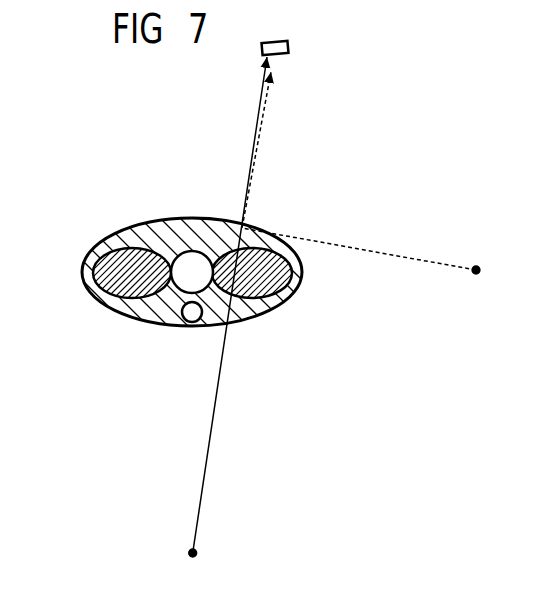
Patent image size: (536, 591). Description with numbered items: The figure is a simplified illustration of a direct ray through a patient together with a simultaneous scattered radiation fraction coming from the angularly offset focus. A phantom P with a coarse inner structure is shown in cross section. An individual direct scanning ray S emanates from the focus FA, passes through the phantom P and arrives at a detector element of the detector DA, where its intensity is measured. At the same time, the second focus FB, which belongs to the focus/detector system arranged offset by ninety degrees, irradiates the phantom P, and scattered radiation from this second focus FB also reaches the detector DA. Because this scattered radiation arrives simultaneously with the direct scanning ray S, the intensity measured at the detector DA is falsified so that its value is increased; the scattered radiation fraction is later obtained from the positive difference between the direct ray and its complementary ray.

The phantom P is at (88, 264).
The direct scanning ray S is at (217, 408).
The detector DA is at (306, 53).
The focus FA is at (188, 552).
The focus FB is at (475, 265).